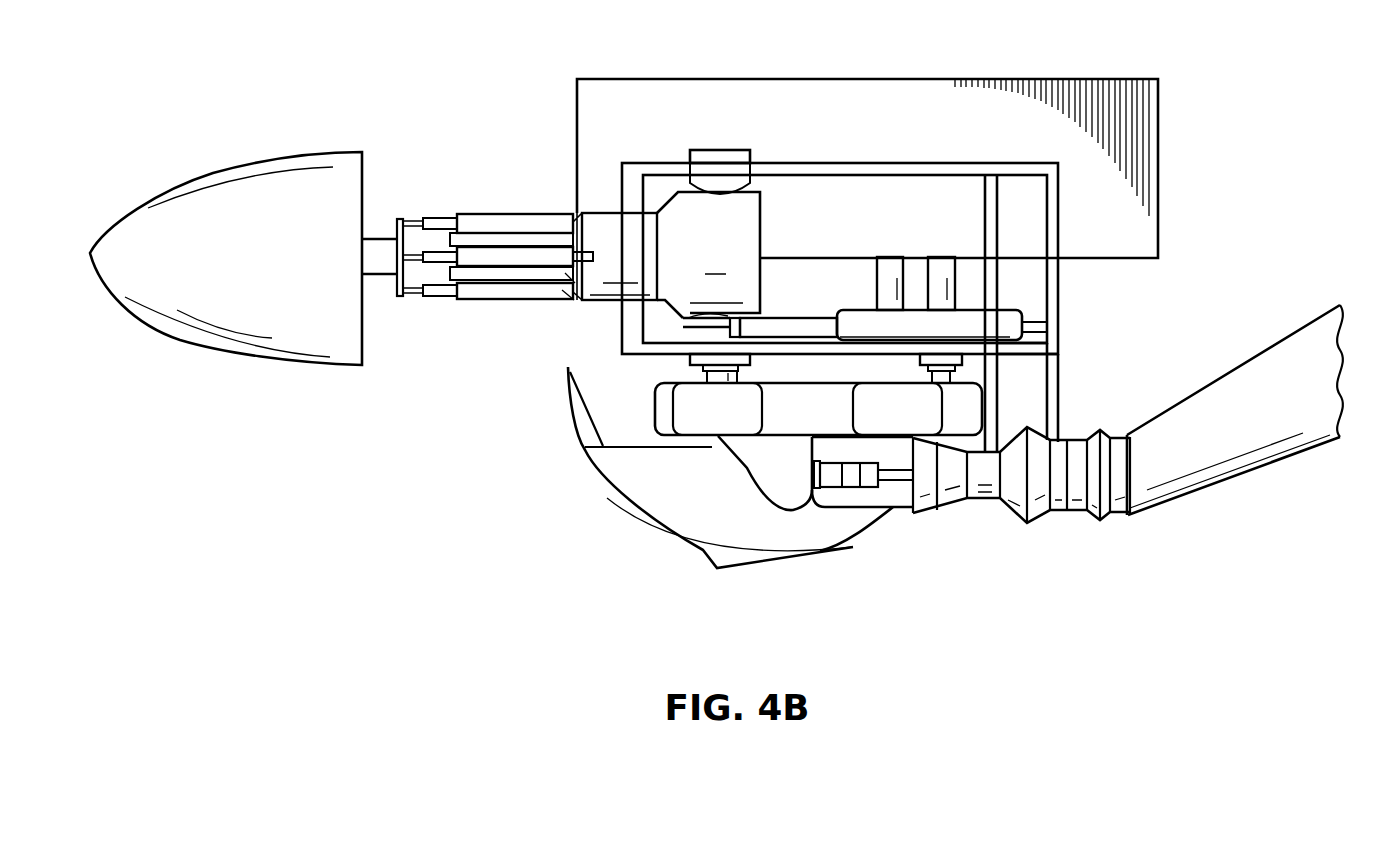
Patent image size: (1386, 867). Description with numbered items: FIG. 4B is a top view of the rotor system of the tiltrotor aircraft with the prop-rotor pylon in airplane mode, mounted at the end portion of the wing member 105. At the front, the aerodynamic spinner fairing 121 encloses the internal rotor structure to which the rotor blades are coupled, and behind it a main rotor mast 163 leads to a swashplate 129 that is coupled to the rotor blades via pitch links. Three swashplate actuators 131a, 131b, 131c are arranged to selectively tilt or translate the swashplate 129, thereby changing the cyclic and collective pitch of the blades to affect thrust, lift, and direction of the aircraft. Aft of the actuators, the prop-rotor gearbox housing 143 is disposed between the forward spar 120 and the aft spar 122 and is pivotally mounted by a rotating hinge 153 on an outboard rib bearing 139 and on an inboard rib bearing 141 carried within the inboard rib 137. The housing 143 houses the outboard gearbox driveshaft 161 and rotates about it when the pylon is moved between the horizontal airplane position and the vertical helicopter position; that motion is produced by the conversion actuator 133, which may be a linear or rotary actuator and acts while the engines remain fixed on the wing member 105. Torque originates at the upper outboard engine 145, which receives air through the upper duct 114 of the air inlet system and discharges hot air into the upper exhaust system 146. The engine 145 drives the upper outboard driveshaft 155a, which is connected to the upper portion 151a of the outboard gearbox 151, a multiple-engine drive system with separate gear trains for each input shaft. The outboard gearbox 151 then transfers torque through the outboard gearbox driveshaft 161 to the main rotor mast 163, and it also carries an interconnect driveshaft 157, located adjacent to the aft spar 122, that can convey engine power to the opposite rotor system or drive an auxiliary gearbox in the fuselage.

The wing member 105 is at (862, 78).
The upper duct 114 is at (790, 538).
The forward spar 120 is at (632, 170).
The aerodynamic spinner fairing 121 is at (235, 173).
The aft spar 122 is at (892, 266).
The swashplate 129 is at (392, 228).
The swashplate actuator 131a is at (526, 213).
The swashplate actuator 131b is at (503, 252).
The swashplate actuator 131c is at (503, 300).
The conversion actuator 133 is at (1010, 312).
The inboard rib 137 is at (870, 163).
The outboard rib bearing 139 is at (1040, 350).
The inboard rib bearing 141 is at (721, 149).
The prop-rotor gearbox housing 143 is at (752, 228).
The upper outboard engine 145 is at (987, 500).
The upper exhaust system 146 is at (1238, 478).
The outboard gearbox 151 is at (753, 402).
The upper portion of gearbox 151a is at (745, 468).
The rotating hinge 153 is at (764, 145).
The upper outboard driveshaft 155a is at (893, 483).
The interconnect driveshaft 157 is at (942, 266).
The outboard gearbox driveshaft 161 is at (707, 372).
The main rotor mast 163 is at (380, 277).